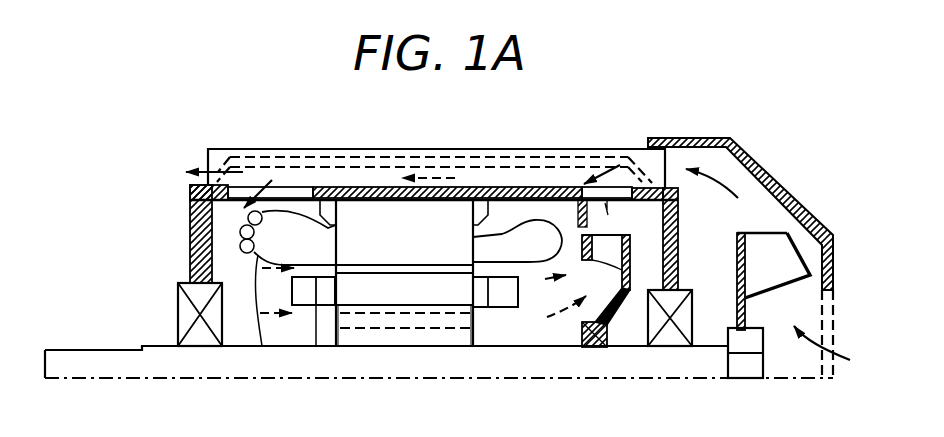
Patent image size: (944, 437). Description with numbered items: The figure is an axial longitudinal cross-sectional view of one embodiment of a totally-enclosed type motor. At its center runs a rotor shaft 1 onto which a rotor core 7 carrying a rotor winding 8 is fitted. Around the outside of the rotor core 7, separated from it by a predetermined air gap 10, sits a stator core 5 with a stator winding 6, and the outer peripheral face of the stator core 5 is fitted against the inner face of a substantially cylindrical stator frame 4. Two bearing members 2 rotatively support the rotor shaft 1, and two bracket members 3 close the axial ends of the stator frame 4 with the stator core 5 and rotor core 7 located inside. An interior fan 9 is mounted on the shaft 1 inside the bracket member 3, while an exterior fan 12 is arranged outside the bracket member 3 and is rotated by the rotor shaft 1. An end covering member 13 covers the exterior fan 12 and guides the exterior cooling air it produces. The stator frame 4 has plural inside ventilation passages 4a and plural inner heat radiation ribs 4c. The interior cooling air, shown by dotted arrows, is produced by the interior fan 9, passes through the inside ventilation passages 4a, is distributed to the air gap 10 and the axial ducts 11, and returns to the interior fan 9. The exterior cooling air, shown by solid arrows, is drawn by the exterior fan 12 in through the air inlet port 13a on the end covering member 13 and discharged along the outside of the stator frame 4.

The rotor shaft 1 is at (97, 362).
The bearing member 2 is at (193, 337).
The bracket member 3 is at (190, 228).
The stator frame 4 is at (257, 185).
The inside ventilation passage 4a is at (473, 173).
The inner heat radiation rib 4c is at (577, 177).
The stator core 5 is at (373, 208).
The stator winding 6 is at (262, 346).
The rotor core 7 is at (368, 340).
The rotor winding 8 is at (315, 306).
The interior fan 9 is at (597, 257).
The air gap 10 is at (410, 272).
The axial duct 11 is at (442, 322).
The exterior fan 12 is at (757, 233).
The end covering member 13 is at (830, 232).
The air inlet port 13a is at (835, 338).